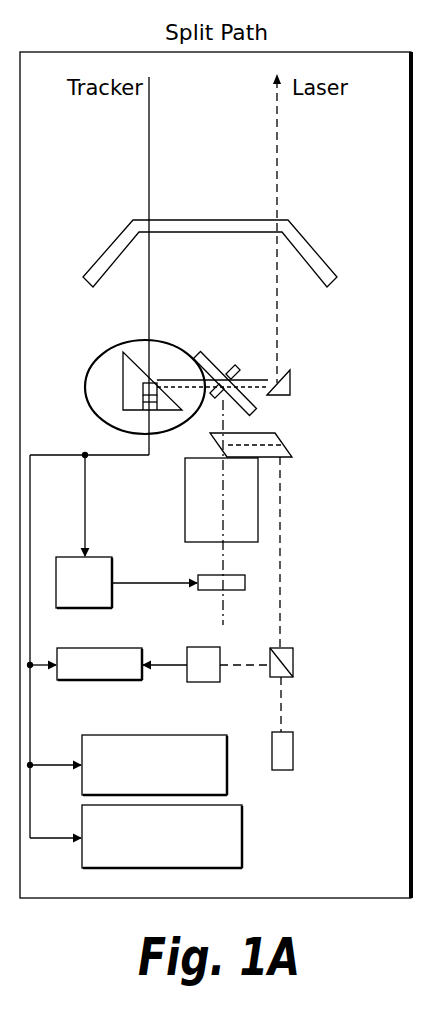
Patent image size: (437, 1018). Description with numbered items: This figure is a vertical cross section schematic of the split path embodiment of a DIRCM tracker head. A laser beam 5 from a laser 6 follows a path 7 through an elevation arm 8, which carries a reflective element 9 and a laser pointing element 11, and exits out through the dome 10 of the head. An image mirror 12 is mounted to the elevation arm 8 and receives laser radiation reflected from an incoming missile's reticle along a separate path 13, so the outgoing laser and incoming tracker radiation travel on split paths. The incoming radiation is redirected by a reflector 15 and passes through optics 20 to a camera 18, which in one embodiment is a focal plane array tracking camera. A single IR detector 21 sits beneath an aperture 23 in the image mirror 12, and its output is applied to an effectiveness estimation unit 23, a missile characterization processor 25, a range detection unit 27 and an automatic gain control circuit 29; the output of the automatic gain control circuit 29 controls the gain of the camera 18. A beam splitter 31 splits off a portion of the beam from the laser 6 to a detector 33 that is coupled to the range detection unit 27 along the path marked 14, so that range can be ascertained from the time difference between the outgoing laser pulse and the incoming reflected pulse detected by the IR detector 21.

The laser beam 5 is at (277, 152).
The laser 6 is at (336, 723).
The path 7 is at (283, 485).
The elevation arm 8 is at (298, 381).
The reflective element 9 is at (230, 370).
The dome 10 is at (315, 236).
The laser pointing element 11 is at (285, 397).
The image mirror 12 is at (118, 398).
The path 13 is at (149, 150).
The laser beam path to detector 14 is at (266, 678).
The reflector 15 is at (207, 358).
The camera 18 is at (248, 575).
The optics 20 is at (184, 497).
The IR detector 21 is at (134, 388).
The effectiveness estimation unit 23 is at (149, 366).
The missile characterization processor 25 is at (242, 830).
The range detection unit 27 is at (105, 648).
The automatic gain control circuit 29 is at (72, 557).
The beam splitter 31 is at (293, 663).
The detector 33 is at (200, 647).